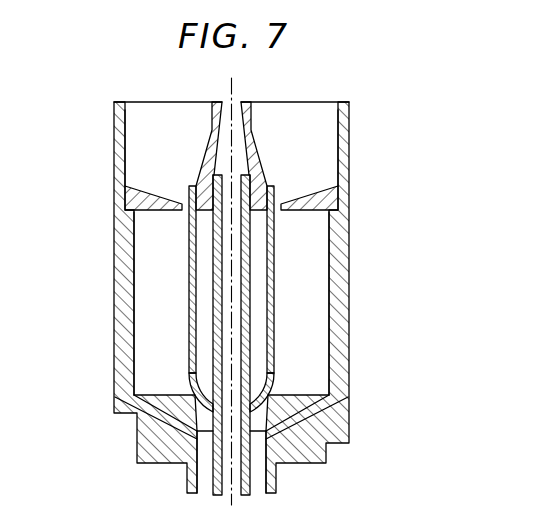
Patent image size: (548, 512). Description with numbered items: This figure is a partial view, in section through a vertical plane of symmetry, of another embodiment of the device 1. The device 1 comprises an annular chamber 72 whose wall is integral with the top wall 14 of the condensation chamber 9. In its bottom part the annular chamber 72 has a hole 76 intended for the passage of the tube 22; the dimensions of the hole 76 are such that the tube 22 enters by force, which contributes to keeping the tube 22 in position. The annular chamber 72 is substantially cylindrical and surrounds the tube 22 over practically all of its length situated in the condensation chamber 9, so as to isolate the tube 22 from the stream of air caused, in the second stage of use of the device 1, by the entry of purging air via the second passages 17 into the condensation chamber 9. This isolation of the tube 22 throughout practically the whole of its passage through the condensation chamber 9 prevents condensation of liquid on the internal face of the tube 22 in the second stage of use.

The device 1 is at (98, 151).
The condensation chamber 9 is at (142, 245).
The top wall 14 is at (330, 197).
The second passages 17 is at (283, 198).
The tube 22 is at (210, 323).
The annular chamber 72 is at (262, 272).
The hole 76 is at (270, 430).